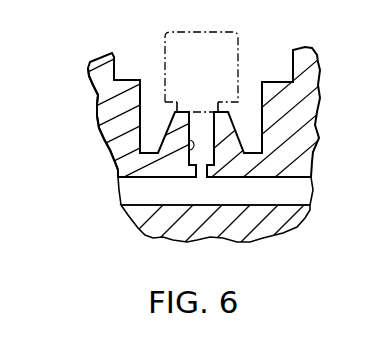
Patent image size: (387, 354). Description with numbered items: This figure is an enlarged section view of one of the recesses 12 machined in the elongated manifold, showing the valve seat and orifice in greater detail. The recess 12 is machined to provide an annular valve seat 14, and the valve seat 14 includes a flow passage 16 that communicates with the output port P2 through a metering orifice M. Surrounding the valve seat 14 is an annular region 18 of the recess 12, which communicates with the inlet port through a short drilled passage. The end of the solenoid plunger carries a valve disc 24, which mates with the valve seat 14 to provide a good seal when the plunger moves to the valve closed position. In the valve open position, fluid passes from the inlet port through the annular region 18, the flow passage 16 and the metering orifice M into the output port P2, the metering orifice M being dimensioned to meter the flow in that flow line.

The recess 12 is at (137, 40).
The valve seat 14 is at (216, 110).
The flow passage 16 is at (189, 141).
The annular region 18 is at (148, 128).
The valve disc 24 is at (175, 103).
The output port P2 is at (137, 193).
The metering orifice M is at (198, 177).